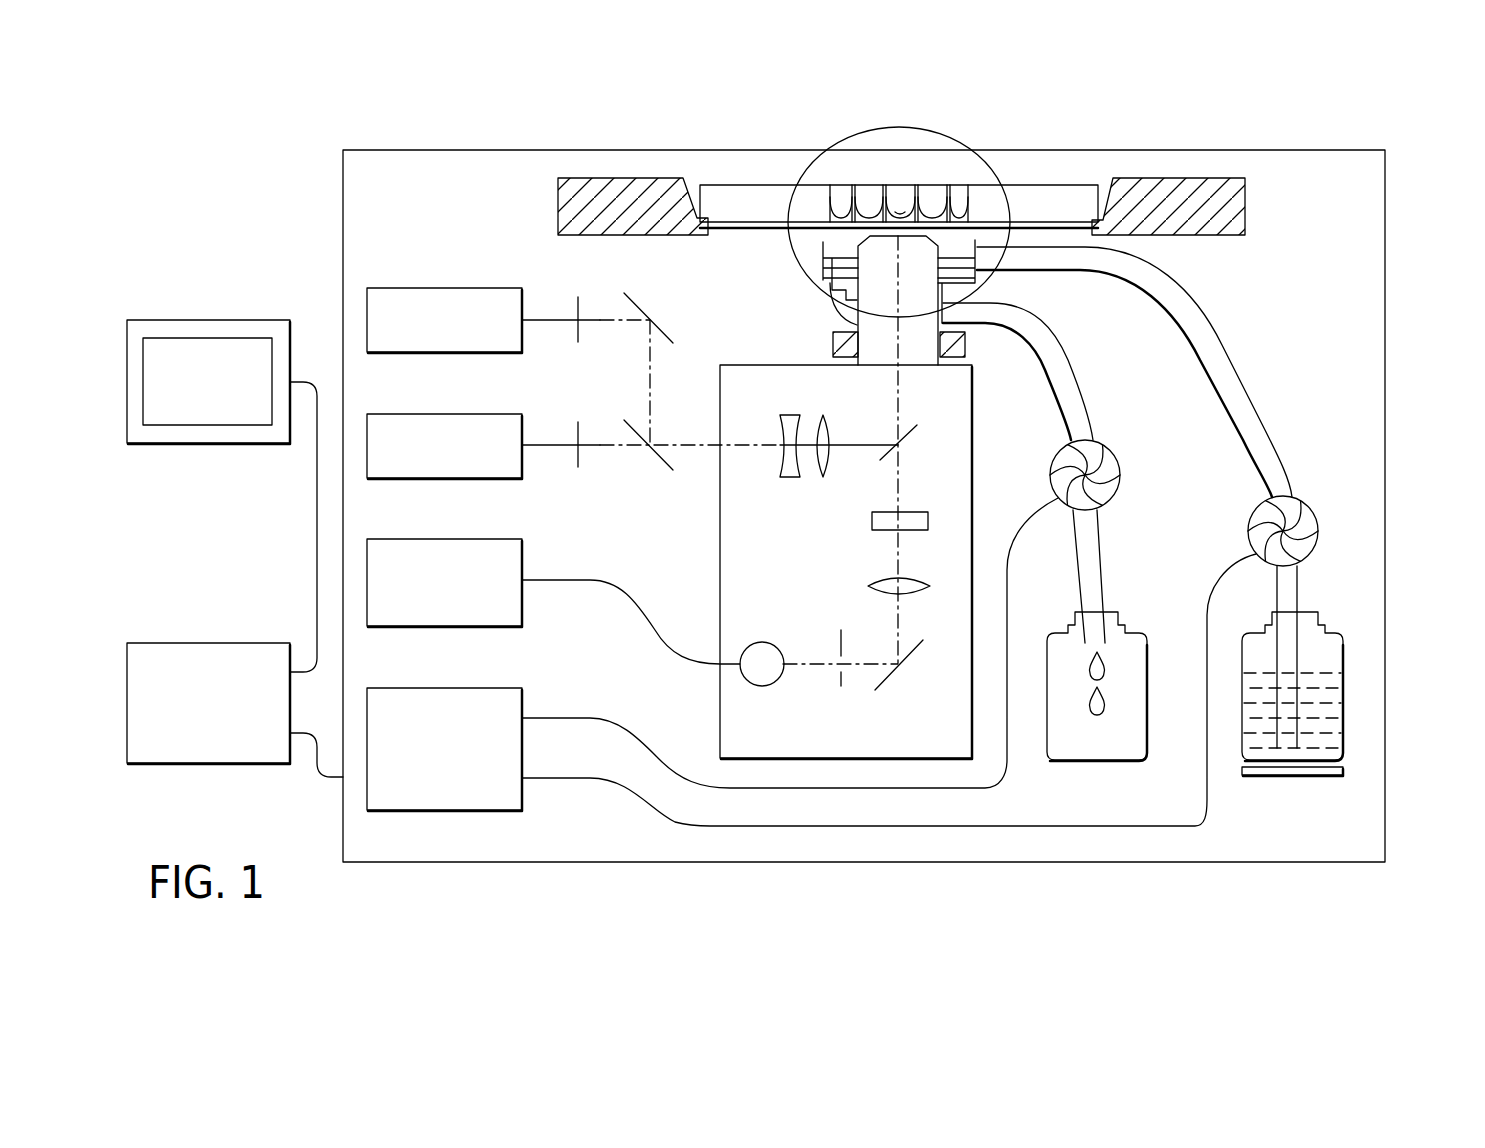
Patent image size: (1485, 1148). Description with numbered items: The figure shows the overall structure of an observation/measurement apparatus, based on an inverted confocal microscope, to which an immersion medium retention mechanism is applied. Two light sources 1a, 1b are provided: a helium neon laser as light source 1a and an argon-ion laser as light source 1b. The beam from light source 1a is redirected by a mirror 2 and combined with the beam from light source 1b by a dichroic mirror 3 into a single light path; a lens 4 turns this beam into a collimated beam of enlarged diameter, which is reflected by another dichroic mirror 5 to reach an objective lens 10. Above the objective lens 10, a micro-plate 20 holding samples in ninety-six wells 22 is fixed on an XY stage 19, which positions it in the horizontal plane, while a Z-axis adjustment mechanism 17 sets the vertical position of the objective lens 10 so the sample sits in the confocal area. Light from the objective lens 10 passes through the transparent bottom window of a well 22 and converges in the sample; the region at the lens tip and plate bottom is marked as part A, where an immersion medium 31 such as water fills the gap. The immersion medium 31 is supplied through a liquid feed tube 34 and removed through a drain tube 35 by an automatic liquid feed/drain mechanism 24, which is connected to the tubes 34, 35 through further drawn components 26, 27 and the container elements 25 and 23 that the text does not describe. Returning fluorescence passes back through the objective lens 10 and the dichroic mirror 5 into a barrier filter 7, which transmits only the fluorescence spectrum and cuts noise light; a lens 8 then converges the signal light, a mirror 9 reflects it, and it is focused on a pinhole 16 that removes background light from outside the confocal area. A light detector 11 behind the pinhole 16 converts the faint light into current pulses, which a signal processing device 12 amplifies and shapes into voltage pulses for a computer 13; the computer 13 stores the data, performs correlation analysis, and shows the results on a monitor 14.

The light source 1a is at (480, 288).
The light source 1b is at (480, 414).
The mirror 2 is at (640, 303).
The dichroic mirror 3 is at (656, 462).
The lens 4 is at (835, 410).
The dichroic mirror 5 is at (908, 435).
The barrier filter 7 is at (870, 520).
The lens 8 is at (868, 586).
The mirror 9 is at (915, 658).
The objective lens 10 is at (865, 253).
The light detector 11 is at (760, 687).
The signal processing device 12 is at (480, 539).
The computer 13 is at (245, 643).
The monitor 14 is at (243, 320).
The pinhole 16 is at (843, 690).
The Z-axis adjustment mechanism 17 is at (833, 342).
The XY stage 19 is at (628, 180).
The micro-plate 20 is at (992, 197).
The well 22 is at (932, 195).
The sample 23 is at (902, 218).
The automatic liquid feed/drain mechanism 24 is at (480, 688).
The liquid tank 25 is at (1335, 655).
The pump 26 is at (1315, 506).
The pump 27 is at (1122, 476).
The immersion medium 31 is at (1335, 713).
The liquid feed tube 34 is at (1203, 298).
The drain tube 35 is at (1065, 352).
The part A is at (848, 132).